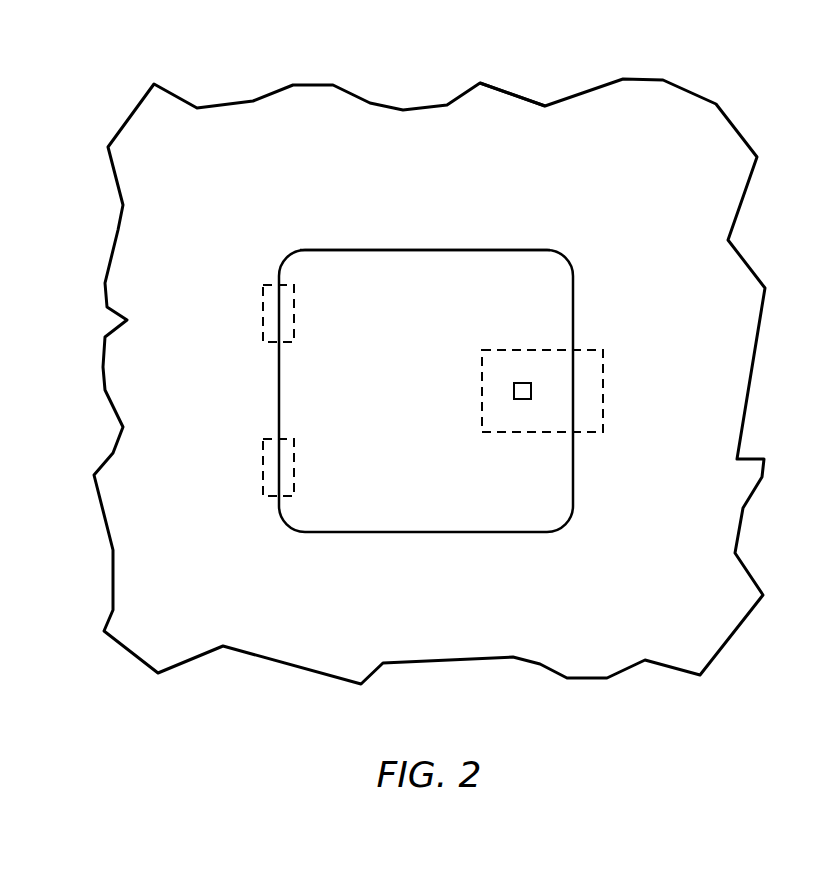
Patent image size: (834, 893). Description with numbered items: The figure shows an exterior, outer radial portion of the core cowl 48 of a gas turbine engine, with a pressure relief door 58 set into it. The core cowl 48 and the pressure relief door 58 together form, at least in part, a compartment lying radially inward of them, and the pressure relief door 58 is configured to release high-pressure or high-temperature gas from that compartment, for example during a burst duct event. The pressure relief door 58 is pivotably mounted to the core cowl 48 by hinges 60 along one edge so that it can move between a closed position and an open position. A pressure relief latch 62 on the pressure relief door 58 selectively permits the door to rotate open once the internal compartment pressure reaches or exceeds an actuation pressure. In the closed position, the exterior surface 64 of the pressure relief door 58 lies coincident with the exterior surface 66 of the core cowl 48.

The core cowl 48 is at (716, 144).
The pressure relief door 58 is at (533, 552).
The hinges 60 is at (263, 302).
The pressure relief latch 62 is at (603, 391).
The exterior surface of the pressure relief door 64 is at (427, 262).
The exterior surface of the core cowl 66 is at (545, 116).